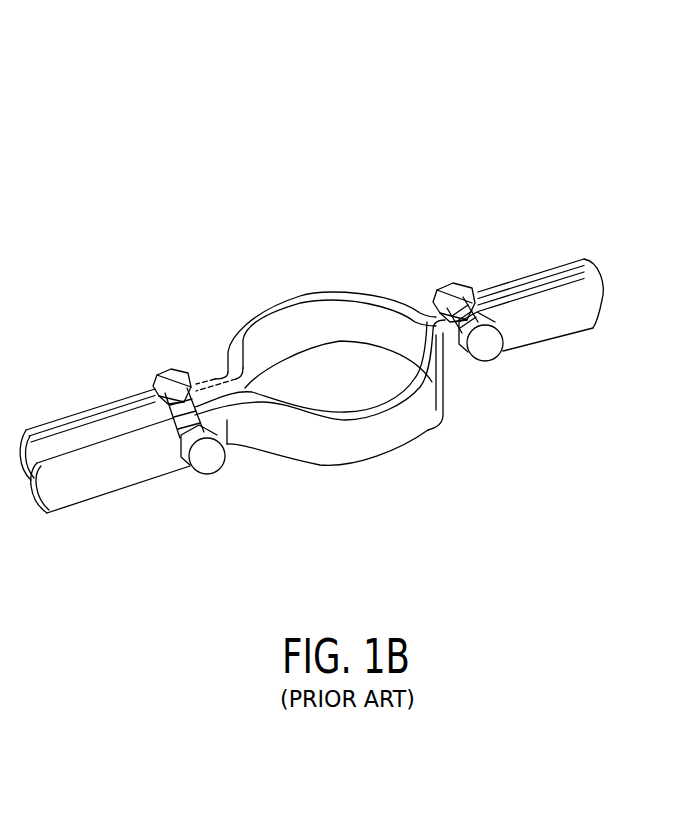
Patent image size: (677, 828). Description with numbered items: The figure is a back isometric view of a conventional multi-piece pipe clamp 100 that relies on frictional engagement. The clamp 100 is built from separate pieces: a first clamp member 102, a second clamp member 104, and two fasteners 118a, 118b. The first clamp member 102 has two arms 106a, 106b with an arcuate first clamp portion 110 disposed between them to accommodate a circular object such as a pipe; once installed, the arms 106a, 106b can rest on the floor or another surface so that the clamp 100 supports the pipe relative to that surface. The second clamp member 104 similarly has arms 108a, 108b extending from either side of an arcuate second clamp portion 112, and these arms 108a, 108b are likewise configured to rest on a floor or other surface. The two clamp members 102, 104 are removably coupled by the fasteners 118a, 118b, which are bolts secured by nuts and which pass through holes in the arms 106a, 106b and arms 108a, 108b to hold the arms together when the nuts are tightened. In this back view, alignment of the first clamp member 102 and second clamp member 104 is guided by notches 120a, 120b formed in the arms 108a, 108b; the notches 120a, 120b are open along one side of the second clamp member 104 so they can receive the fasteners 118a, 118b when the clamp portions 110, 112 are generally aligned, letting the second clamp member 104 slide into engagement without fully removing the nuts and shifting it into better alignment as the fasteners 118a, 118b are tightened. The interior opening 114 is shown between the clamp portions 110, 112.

The pipe clamp 100 is at (464, 82).
The first clamp member 102 is at (598, 266).
The second clamp member 104 is at (584, 261).
The arm 106a is at (552, 288).
The arm 106b is at (88, 455).
The arm 108a is at (507, 280).
The arm 108b is at (80, 413).
The first clamp portion 110 is at (387, 410).
The second clamp portion 112 is at (283, 303).
The pipe opening 114 is at (383, 340).
The fastener 118a is at (486, 356).
The fastener 118b is at (208, 458).
The notch 120a is at (495, 309).
The notch 120b is at (225, 412).